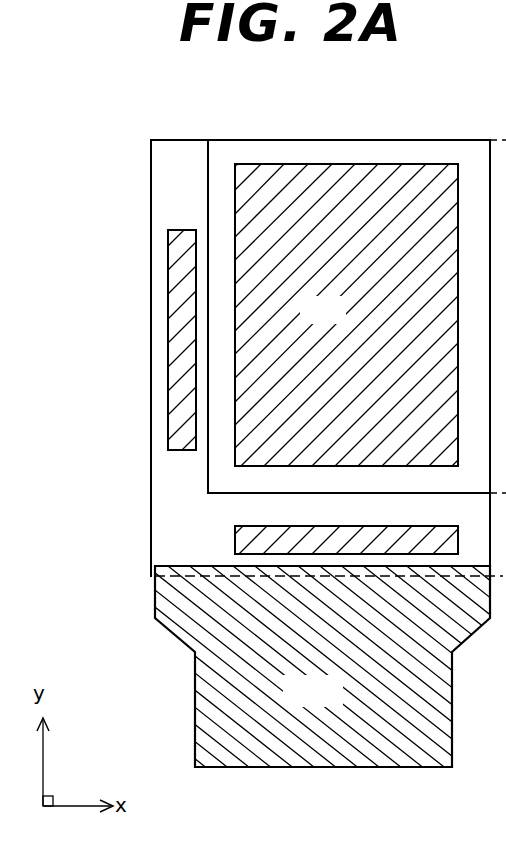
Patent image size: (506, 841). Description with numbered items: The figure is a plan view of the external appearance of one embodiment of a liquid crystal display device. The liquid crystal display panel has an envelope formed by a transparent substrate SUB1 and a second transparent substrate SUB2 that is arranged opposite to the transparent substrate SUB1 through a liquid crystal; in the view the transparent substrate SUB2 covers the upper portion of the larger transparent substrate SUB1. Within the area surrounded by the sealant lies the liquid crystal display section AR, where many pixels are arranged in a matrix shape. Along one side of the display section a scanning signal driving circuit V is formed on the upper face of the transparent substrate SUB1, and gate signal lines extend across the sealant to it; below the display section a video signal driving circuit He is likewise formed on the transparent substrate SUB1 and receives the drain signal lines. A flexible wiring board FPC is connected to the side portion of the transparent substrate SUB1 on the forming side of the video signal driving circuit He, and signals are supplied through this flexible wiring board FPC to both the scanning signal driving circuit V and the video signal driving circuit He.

The transparent substrate SUB1 is at (151, 190).
The transparent substrate SUB2 is at (208, 475).
The liquid crystal display section AR is at (346, 315).
The scanning signal driving circuit V is at (183, 242).
The video signal driving circuit He is at (235, 541).
The flexible wiring board FPC is at (253, 666).